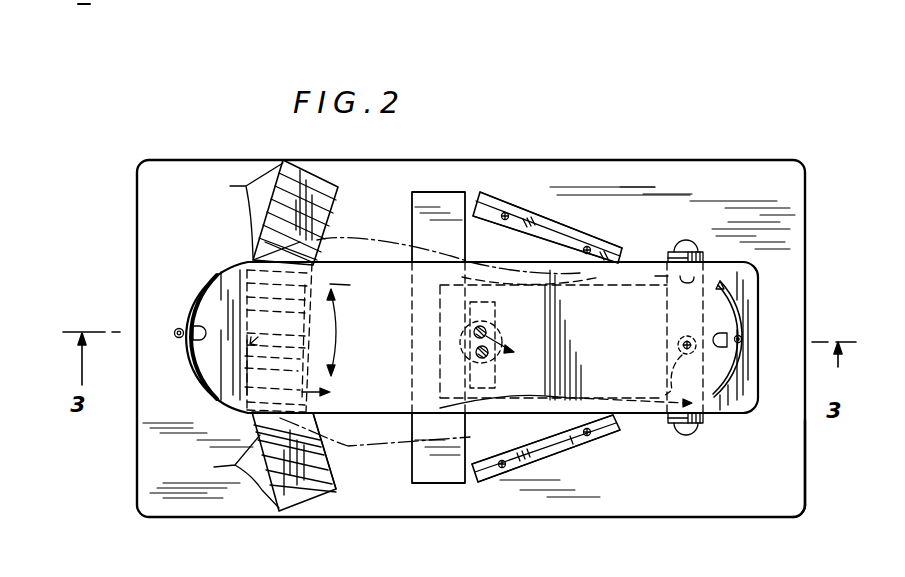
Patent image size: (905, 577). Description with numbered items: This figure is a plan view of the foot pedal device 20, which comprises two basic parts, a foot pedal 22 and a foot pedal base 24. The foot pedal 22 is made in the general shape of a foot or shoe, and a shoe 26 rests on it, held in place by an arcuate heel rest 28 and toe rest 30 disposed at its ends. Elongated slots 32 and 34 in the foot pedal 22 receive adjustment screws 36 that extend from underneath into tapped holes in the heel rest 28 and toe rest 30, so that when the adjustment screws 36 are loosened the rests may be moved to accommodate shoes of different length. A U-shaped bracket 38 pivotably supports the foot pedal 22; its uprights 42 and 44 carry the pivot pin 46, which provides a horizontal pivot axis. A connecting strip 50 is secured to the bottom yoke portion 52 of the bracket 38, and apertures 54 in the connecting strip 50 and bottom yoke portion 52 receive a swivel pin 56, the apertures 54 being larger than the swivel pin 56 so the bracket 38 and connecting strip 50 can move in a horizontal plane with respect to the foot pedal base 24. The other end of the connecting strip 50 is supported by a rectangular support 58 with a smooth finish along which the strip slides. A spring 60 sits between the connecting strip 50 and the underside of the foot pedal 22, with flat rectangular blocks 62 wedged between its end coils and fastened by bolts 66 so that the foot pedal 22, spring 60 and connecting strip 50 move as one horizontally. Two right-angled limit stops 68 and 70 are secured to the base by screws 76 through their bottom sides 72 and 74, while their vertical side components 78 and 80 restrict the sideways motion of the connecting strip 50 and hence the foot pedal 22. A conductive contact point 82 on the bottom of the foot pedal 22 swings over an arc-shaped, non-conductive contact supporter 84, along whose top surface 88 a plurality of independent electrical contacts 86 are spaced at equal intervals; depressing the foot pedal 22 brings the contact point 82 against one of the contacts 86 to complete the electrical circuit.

The foot pedal device 20 is at (806, 492).
The foot pedal 22 is at (738, 417).
The foot pedal base 24 is at (805, 512).
The shoe 26 is at (360, 246).
The heel rest 28 is at (740, 327).
The toe rest 30 is at (188, 360).
The elongated slot 32 is at (725, 341).
The elongated slot 34 is at (197, 302).
The adjustment screws 36 is at (175, 333).
The U-shaped bracket 38 is at (671, 318).
The upright 42 is at (702, 428).
The upright 44 is at (668, 254).
The pivot pin 46 is at (688, 246).
The connecting strip 50 is at (620, 351).
The bottom yoke portion 52 is at (660, 275).
The apertures 54 is at (668, 378).
The swivel pin 56 is at (667, 345).
The support 58 is at (448, 200).
The spring 60 is at (498, 327).
The flat rectangular blocks 62 is at (492, 380).
The bolts 66 is at (508, 353).
The limit stop 68 is at (560, 226).
The limit stop 70 is at (545, 460).
The bottom side 72 is at (551, 240).
The bottom side 74 is at (482, 474).
The screws 76 is at (504, 221).
The vertical side component 78 is at (536, 206).
The vertical side component 80 is at (590, 444).
The contact point 82 is at (220, 335).
The contact supporter 84 is at (340, 488).
The electrical contacts 86 is at (277, 335).
The top surface 88 is at (336, 200).